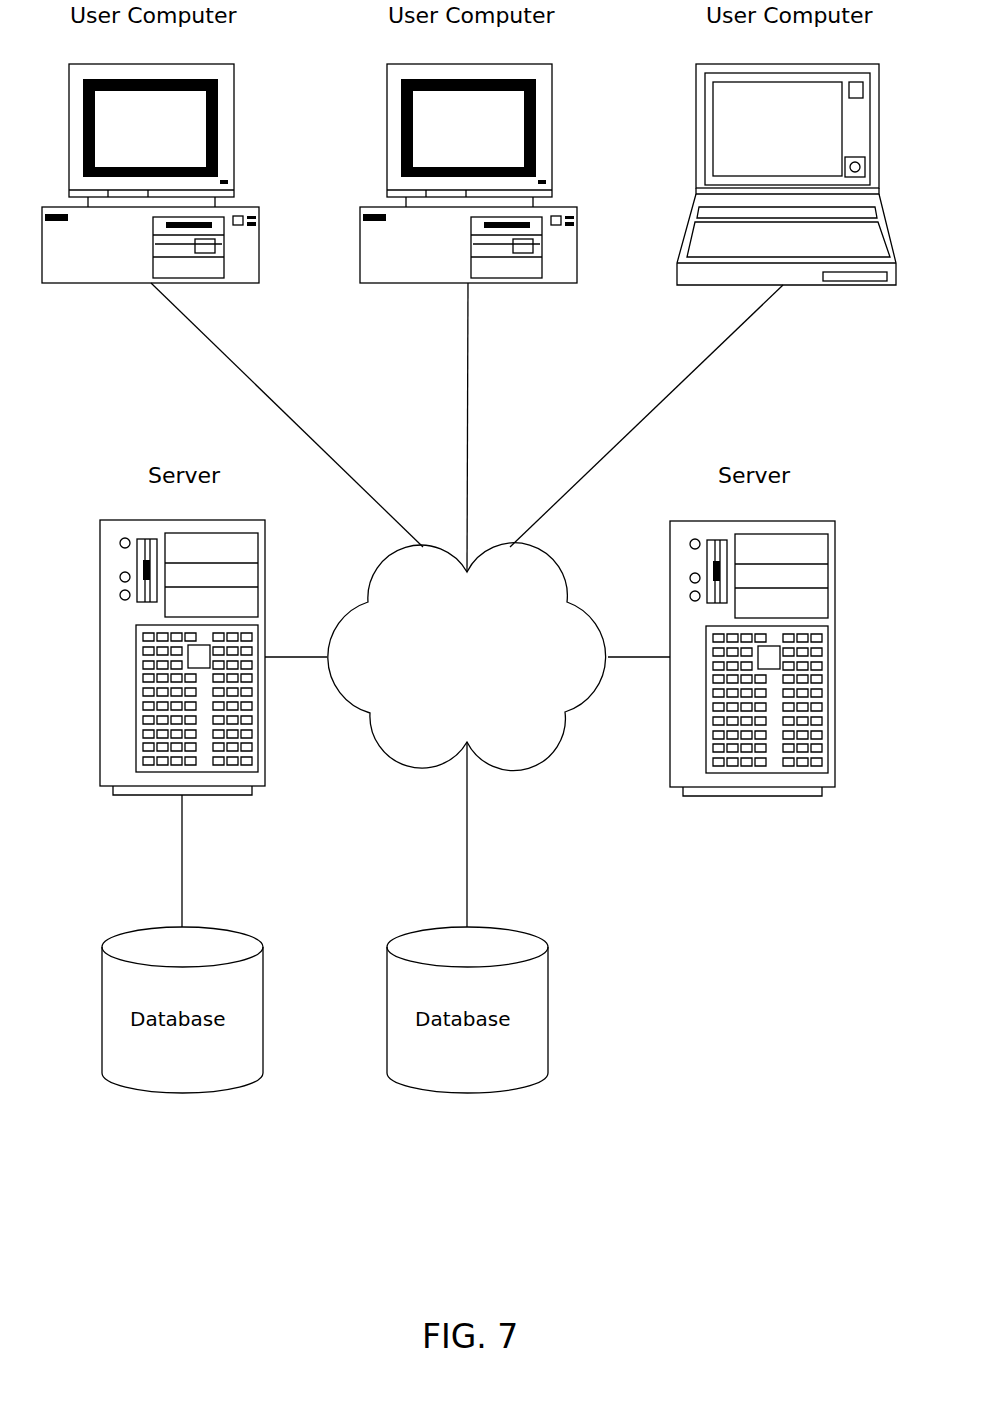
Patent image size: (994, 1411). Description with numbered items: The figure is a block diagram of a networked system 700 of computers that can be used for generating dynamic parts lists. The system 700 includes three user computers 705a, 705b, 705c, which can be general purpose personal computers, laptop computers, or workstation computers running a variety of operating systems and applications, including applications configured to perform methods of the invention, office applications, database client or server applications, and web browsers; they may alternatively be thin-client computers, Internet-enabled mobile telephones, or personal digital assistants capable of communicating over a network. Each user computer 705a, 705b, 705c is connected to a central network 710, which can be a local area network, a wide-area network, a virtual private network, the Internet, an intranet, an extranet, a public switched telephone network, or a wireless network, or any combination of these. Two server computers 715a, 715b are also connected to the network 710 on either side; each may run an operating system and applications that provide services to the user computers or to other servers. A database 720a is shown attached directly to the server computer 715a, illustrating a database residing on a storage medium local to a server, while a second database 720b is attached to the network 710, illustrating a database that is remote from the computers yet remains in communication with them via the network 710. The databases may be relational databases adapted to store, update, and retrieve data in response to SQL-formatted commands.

The system 700 is at (742, 1156).
The user computer 705a is at (260, 229).
The user computer 705b is at (358, 230).
The user computer 705c is at (693, 175).
The network 710 is at (508, 768).
The server computer 715a is at (99, 656).
The server computer 715b is at (836, 657).
The database 720a is at (180, 1093).
The database 720b is at (465, 1093).